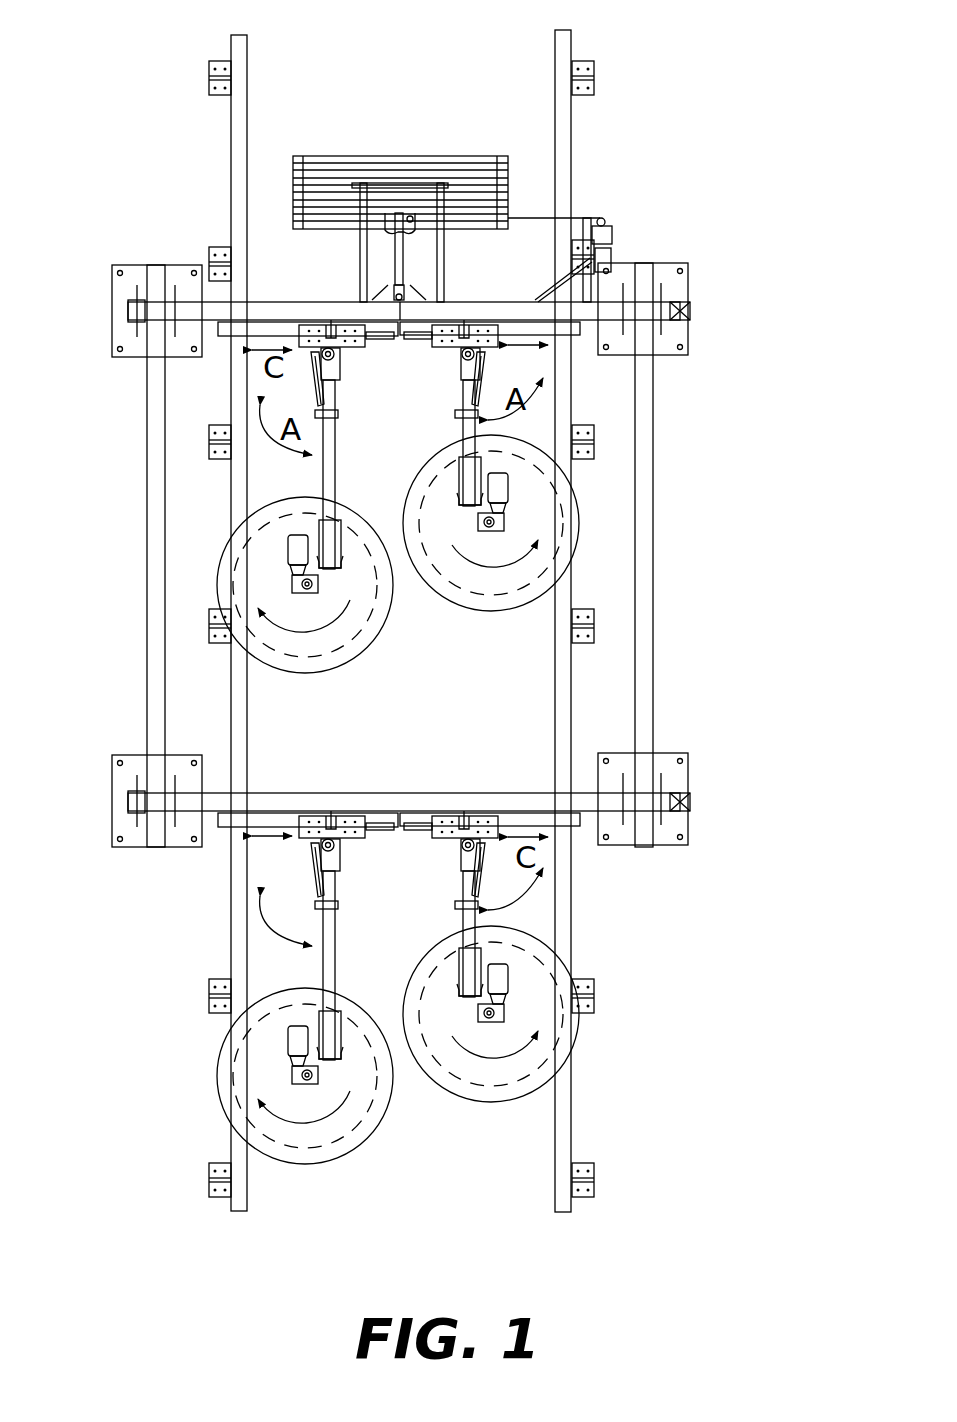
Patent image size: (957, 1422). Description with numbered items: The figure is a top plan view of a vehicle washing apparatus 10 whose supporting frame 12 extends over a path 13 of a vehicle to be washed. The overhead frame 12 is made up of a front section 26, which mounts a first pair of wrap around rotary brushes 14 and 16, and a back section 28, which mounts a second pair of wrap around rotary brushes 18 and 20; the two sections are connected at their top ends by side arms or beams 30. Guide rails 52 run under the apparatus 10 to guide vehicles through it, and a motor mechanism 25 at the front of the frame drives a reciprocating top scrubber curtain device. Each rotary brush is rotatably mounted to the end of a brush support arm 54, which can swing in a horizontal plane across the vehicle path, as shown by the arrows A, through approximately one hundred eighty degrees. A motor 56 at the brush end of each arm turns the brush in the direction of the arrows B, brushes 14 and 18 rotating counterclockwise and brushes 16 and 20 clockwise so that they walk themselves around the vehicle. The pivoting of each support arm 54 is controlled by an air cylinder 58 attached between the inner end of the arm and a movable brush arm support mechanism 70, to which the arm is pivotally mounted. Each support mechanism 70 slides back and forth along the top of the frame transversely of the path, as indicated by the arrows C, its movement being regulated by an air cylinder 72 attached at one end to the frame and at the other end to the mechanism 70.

The vehicle washing apparatus 10 is at (728, 382).
The supporting frame 12 is at (144, 405).
The path 13 is at (400, 108).
The wrap around rotary brush 14 is at (512, 610).
The wrap around rotary brush 16 is at (310, 673).
The wrap around rotary brush 18 is at (513, 1105).
The wrap around rotary brush 20 is at (322, 1165).
The motor mechanism 25 is at (613, 224).
The front section 26 is at (255, 300).
The back section 28 is at (286, 795).
The side arms or beams 30 is at (148, 545).
The guide rails 52 is at (237, 165).
The brush support arm 54 is at (462, 425).
The motor 56 is at (510, 497).
The air cylinder 58 is at (486, 380).
The movable brush arm support mechanism 70 is at (444, 352).
The air cylinder 72 is at (340, 322).